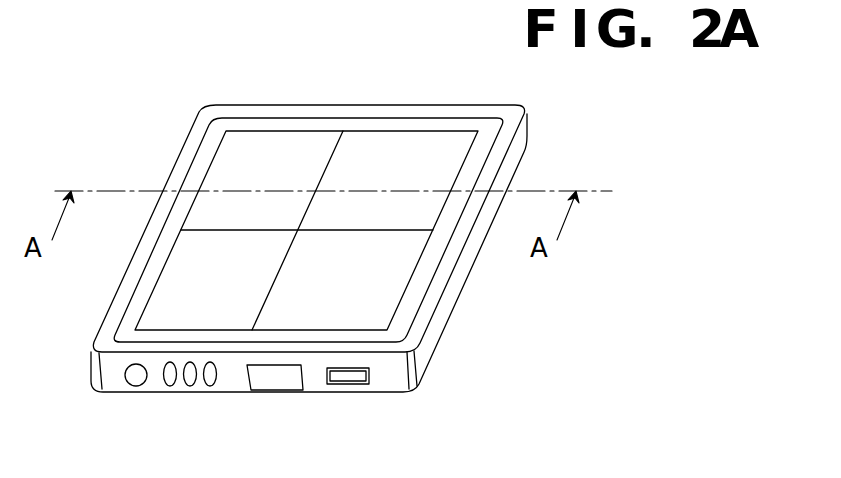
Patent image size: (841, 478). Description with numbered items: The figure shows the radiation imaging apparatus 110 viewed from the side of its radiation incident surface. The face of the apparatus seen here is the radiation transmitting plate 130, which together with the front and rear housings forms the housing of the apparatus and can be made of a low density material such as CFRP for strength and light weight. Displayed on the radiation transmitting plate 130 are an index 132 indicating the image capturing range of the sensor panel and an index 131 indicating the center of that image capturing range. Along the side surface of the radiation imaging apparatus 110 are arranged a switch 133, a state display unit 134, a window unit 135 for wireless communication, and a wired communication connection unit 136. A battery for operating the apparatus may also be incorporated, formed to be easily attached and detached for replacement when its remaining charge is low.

The radiation imaging apparatus 110 is at (146, 121).
The radiation transmitting plate 130 is at (488, 131).
The index 131 is at (341, 134).
The index 132 is at (396, 128).
The switch 133 is at (130, 388).
The state display unit 134 is at (165, 398).
The window unit 135 is at (285, 383).
The wired communication connection unit 136 is at (355, 384).